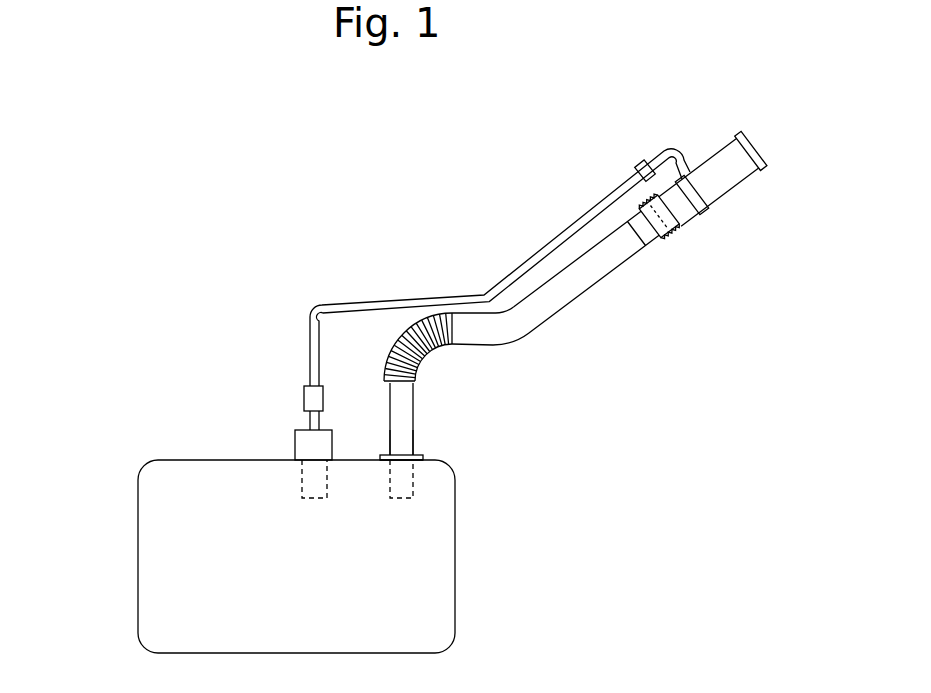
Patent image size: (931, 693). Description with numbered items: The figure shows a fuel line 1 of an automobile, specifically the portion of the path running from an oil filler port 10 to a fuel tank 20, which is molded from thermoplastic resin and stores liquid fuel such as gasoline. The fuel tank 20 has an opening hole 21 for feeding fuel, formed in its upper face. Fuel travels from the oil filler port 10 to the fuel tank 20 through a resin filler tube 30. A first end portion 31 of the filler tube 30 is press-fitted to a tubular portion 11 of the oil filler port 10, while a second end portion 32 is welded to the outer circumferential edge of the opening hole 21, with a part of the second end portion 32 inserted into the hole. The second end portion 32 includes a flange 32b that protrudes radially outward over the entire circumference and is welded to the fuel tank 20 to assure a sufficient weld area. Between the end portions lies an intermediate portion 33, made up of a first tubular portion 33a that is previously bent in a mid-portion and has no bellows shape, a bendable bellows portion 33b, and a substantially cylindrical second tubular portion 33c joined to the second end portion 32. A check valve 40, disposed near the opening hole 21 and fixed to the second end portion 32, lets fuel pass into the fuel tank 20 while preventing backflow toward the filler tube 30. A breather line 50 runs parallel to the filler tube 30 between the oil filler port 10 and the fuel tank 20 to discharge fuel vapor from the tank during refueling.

The fuel line 1 is at (227, 307).
The oil filler port 10 is at (740, 182).
The tubular portion 11 is at (671, 230).
The fuel tank 20 is at (140, 547).
The opening hole 21 is at (415, 462).
The resin filler tube 30 is at (613, 275).
The first end portion 31 is at (662, 234).
The second end portion 32 is at (473, 439).
The flange 32b is at (420, 456).
The intermediate portion 33 is at (530, 332).
The first tubular portion 33a is at (567, 304).
The bellows portion 33b is at (437, 347).
The second tubular portion 33c is at (413, 402).
The check valve 40 is at (407, 498).
The breather line 50 is at (358, 302).